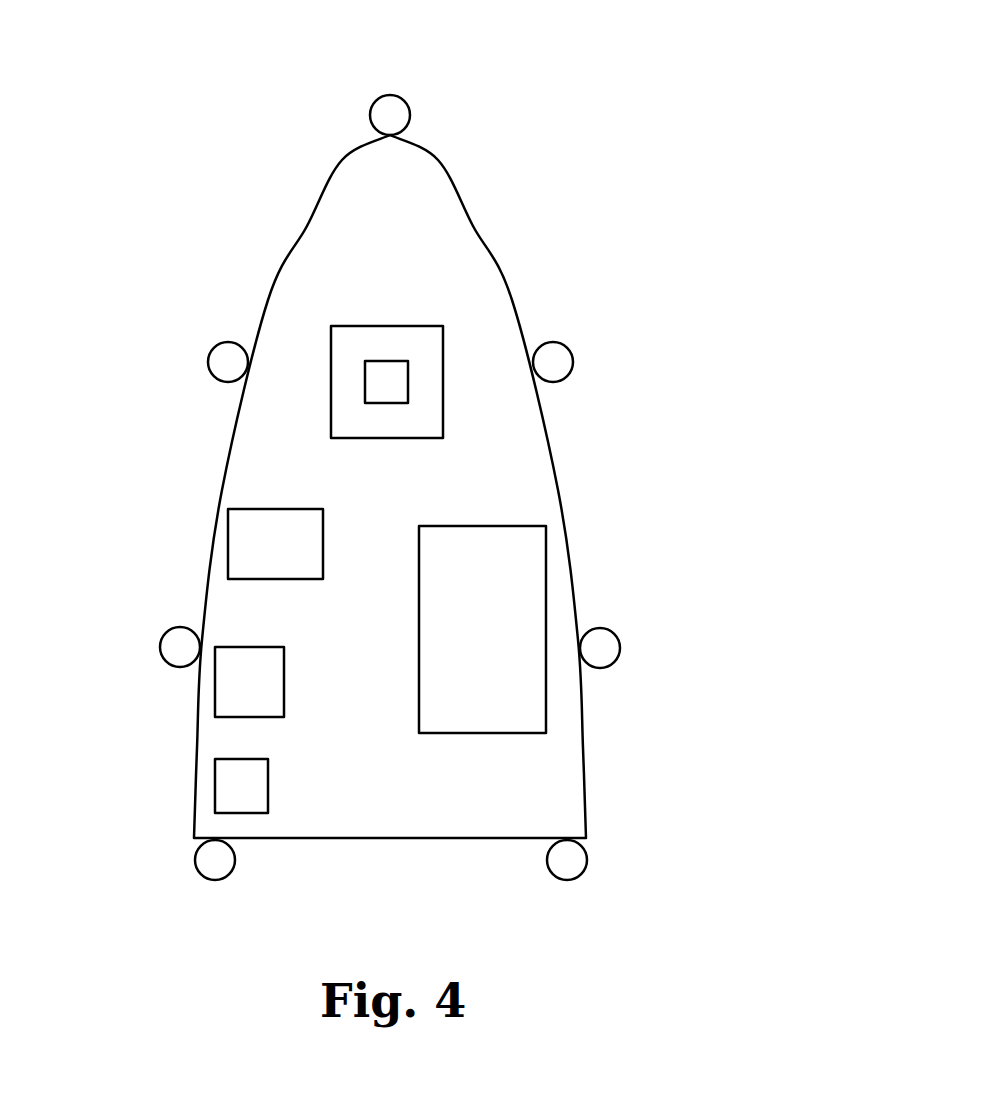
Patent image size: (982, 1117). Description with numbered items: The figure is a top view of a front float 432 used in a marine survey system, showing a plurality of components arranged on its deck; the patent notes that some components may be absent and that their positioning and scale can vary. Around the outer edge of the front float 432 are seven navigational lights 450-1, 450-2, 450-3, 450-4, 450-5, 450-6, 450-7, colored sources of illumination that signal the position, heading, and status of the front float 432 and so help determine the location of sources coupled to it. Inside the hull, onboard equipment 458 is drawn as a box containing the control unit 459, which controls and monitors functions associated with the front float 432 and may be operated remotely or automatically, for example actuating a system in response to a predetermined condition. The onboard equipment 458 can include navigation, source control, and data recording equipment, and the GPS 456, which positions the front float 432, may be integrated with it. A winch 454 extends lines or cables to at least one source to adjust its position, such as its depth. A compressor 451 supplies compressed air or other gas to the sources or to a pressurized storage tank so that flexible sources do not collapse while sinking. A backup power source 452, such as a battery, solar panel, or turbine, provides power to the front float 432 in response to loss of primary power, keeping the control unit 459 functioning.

The front float 432 is at (604, 92).
The navigational light 450-1 is at (390, 95).
The navigational light 450-2 is at (573, 360).
The navigational light 450-3 is at (620, 646).
The navigational light 450-4 is at (565, 880).
The navigational light 450-5 is at (214, 880).
The navigational light 450-6 is at (160, 648).
The navigational light 450-7 is at (208, 361).
The compressor 451 is at (215, 783).
The backup power source 452 is at (546, 580).
The winch 454 is at (215, 692).
The GPS 456 is at (228, 544).
The onboard equipment 458 is at (331, 393).
The control unit 459 is at (390, 361).